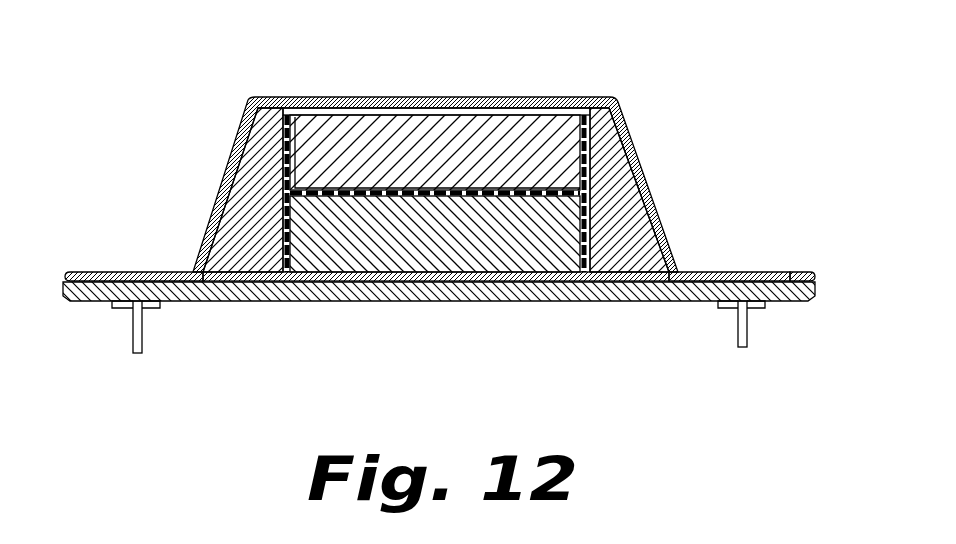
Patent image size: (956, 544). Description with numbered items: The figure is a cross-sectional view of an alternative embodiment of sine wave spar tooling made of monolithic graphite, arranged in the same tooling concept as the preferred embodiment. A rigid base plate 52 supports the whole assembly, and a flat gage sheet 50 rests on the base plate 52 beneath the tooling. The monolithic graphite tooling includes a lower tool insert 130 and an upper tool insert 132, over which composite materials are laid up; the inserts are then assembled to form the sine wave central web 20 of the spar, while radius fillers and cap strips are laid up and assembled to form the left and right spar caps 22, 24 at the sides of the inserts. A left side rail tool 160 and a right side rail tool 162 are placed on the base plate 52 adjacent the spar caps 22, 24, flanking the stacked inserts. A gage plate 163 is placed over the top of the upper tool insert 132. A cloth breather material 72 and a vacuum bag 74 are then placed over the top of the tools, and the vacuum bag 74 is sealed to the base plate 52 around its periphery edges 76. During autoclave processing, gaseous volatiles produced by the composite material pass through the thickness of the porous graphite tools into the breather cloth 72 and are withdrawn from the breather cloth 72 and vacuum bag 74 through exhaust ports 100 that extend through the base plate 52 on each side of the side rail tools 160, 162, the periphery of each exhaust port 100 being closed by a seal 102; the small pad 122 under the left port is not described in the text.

The cloth breather material 72 is at (529, 98).
The left side rail tool 160 is at (246, 228).
The right side rail tool 162 is at (630, 172).
The gage plate 163 is at (433, 113).
The upper tool insert 132 is at (386, 142).
The sine wave central web 20 is at (480, 196).
The lower tool insert 130 is at (353, 258).
The right spar cap 24 is at (289, 268).
The left spar cap 22 is at (582, 272).
The gage sheet 50 is at (396, 278).
The edges 76 is at (82, 274).
The vacuum bag 74 is at (715, 273).
The base plate 52 is at (814, 289).
The exhaust ports 100 is at (135, 351).
The left pad 122 is at (152, 307).
The seal 102 is at (757, 307).